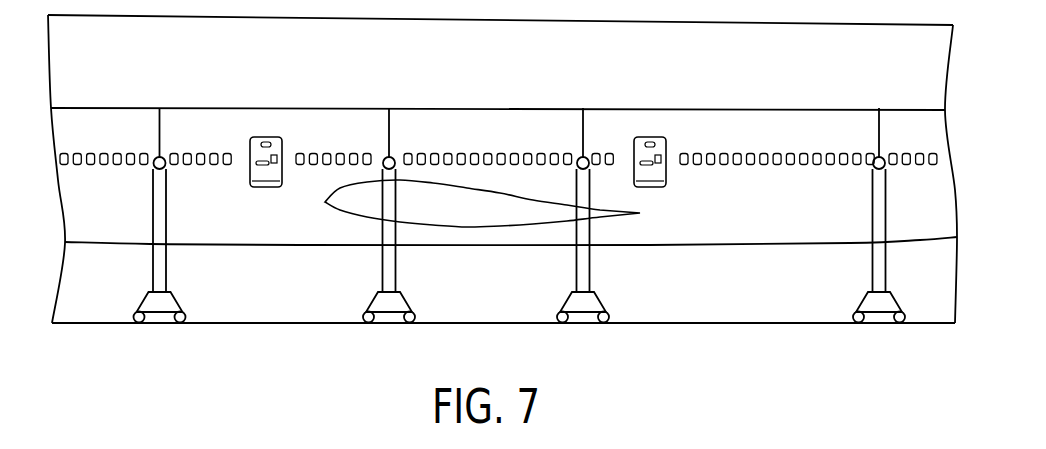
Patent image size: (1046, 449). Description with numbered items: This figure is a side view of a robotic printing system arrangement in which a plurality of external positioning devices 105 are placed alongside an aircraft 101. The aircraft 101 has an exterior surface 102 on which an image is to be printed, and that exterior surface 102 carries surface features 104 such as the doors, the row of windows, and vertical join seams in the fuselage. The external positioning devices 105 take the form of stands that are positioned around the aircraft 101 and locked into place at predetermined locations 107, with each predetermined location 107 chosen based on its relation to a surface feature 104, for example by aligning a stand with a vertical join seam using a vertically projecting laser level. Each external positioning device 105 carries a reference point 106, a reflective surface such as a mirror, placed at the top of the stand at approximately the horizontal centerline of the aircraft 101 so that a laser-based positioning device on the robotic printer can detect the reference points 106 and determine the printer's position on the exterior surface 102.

The aircraft 101 is at (112, 108).
The exterior surface 102 is at (297, 128).
The surface features 104 is at (160, 130).
The external positioning devices 105 is at (167, 265).
The reference point 106 is at (166, 167).
The predetermined locations 107 is at (157, 318).